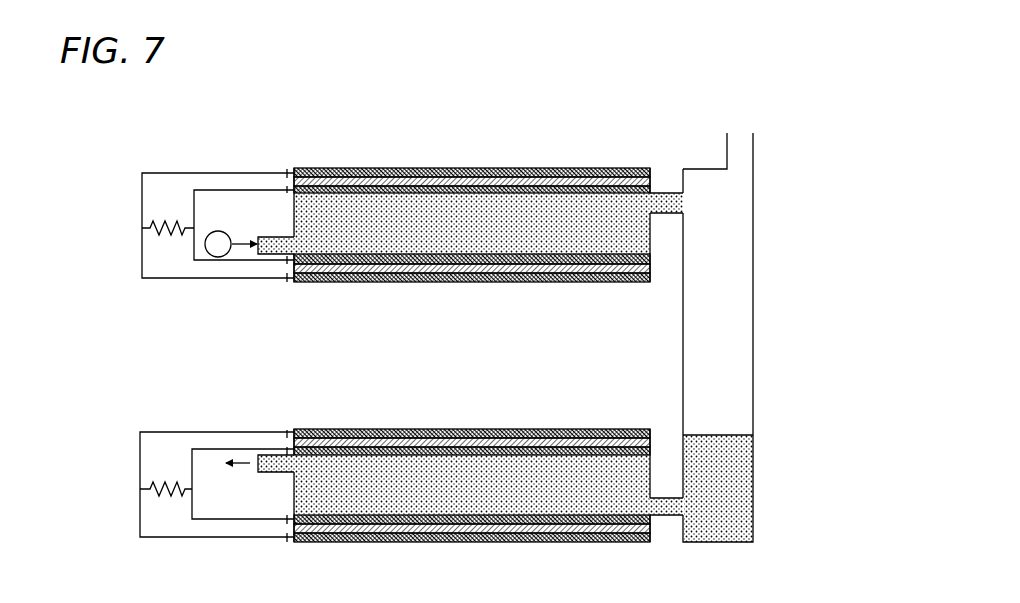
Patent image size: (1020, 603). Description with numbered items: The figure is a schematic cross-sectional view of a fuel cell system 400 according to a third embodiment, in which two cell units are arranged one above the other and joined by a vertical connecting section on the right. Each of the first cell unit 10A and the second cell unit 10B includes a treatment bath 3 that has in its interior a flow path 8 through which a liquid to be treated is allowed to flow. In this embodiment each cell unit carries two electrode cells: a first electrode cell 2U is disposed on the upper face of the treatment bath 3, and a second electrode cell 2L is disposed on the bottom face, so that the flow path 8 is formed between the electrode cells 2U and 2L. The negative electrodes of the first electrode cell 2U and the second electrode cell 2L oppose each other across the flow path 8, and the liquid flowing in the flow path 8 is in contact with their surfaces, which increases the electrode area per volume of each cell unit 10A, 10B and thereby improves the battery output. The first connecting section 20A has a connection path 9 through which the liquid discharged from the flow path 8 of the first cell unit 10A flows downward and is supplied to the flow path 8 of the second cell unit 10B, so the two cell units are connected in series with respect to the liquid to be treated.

The fuel cell system 400 is at (774, 106).
The first cell unit 10A is at (614, 156).
The second cell unit 10B is at (608, 427).
The first connecting section 20A is at (772, 253).
The connection path 9 is at (724, 320).
The flow path 8 is at (396, 238).
The treatment bath 3 is at (459, 167).
The first electrode cell 2U is at (285, 180).
The second electrode cell 2L is at (285, 272).